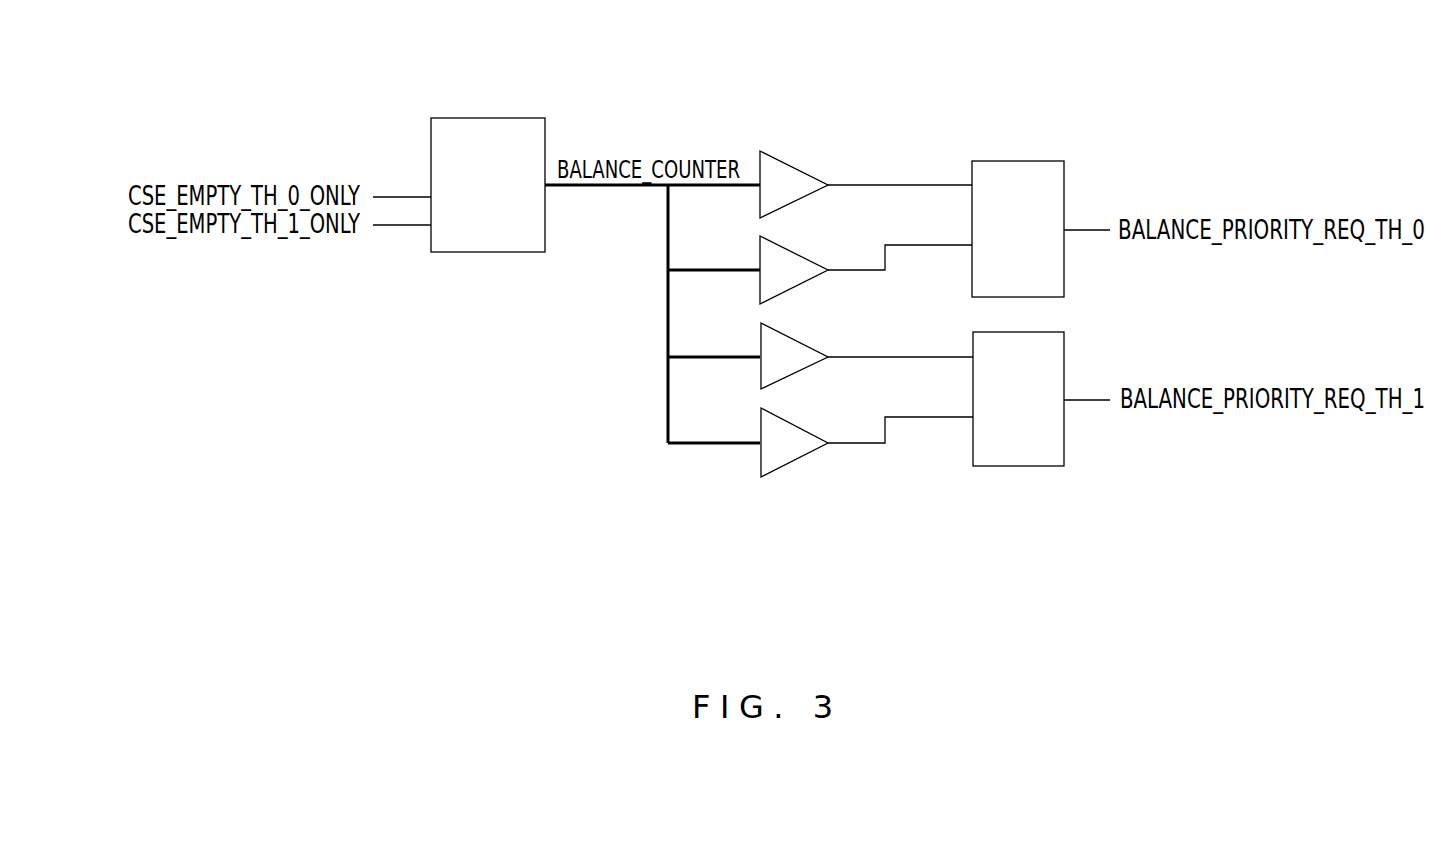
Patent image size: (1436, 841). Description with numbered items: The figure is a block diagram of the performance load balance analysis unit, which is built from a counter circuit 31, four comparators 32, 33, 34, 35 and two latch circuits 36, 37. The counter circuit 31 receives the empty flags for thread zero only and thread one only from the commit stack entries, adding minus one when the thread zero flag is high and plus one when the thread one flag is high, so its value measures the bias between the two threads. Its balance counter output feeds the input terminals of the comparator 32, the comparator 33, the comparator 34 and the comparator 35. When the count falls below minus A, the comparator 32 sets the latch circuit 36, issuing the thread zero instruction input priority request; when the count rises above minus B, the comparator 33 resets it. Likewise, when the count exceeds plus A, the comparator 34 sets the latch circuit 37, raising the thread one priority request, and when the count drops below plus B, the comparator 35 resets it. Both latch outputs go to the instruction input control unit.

The counter circuit 31 is at (487, 117).
The comparator 32 is at (800, 167).
The comparator 33 is at (800, 252).
The comparator 34 is at (800, 339).
The comparator 35 is at (800, 425).
The latch circuit 36 is at (1022, 160).
The latch circuit 37 is at (1021, 467).